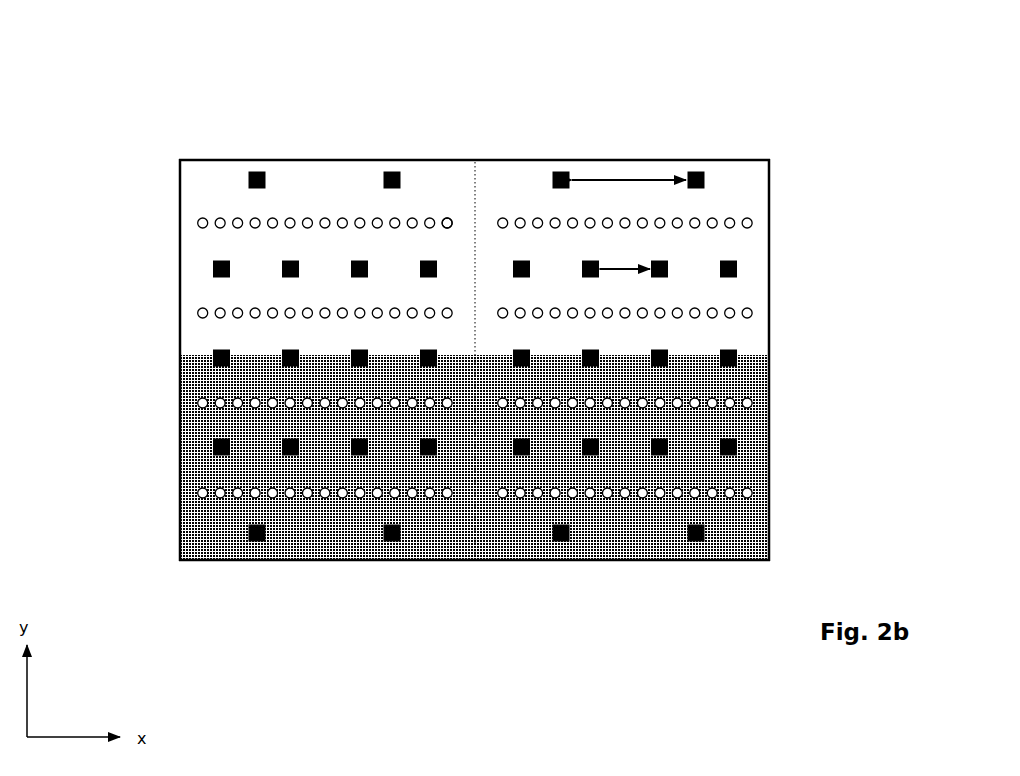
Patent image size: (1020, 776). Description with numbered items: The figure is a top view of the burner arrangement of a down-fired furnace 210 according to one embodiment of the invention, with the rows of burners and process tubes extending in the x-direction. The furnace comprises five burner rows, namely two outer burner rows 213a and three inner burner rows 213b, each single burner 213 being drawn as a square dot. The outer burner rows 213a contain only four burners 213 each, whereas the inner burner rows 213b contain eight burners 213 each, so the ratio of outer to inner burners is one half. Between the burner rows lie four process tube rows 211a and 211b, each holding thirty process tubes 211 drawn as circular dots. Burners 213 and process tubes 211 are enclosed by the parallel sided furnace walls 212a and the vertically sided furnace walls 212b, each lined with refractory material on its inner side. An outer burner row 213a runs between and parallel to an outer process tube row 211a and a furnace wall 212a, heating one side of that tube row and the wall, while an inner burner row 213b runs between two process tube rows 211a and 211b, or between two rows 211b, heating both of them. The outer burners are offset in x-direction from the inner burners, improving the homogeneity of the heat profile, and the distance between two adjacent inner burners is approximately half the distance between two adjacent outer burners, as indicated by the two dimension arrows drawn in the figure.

The furnace 210 is at (764, 85).
The process tube 211 is at (450, 216).
The burner 213 is at (401, 169).
The parallel sided furnace wall 212a is at (226, 157).
The vertically sided furnace wall 212b is at (178, 181).
The outer burner row 213a is at (145, 182).
The inner burner row 213b is at (145, 268).
The outer process tube row 211a is at (145, 228).
The inner process tube row 211b is at (145, 316).